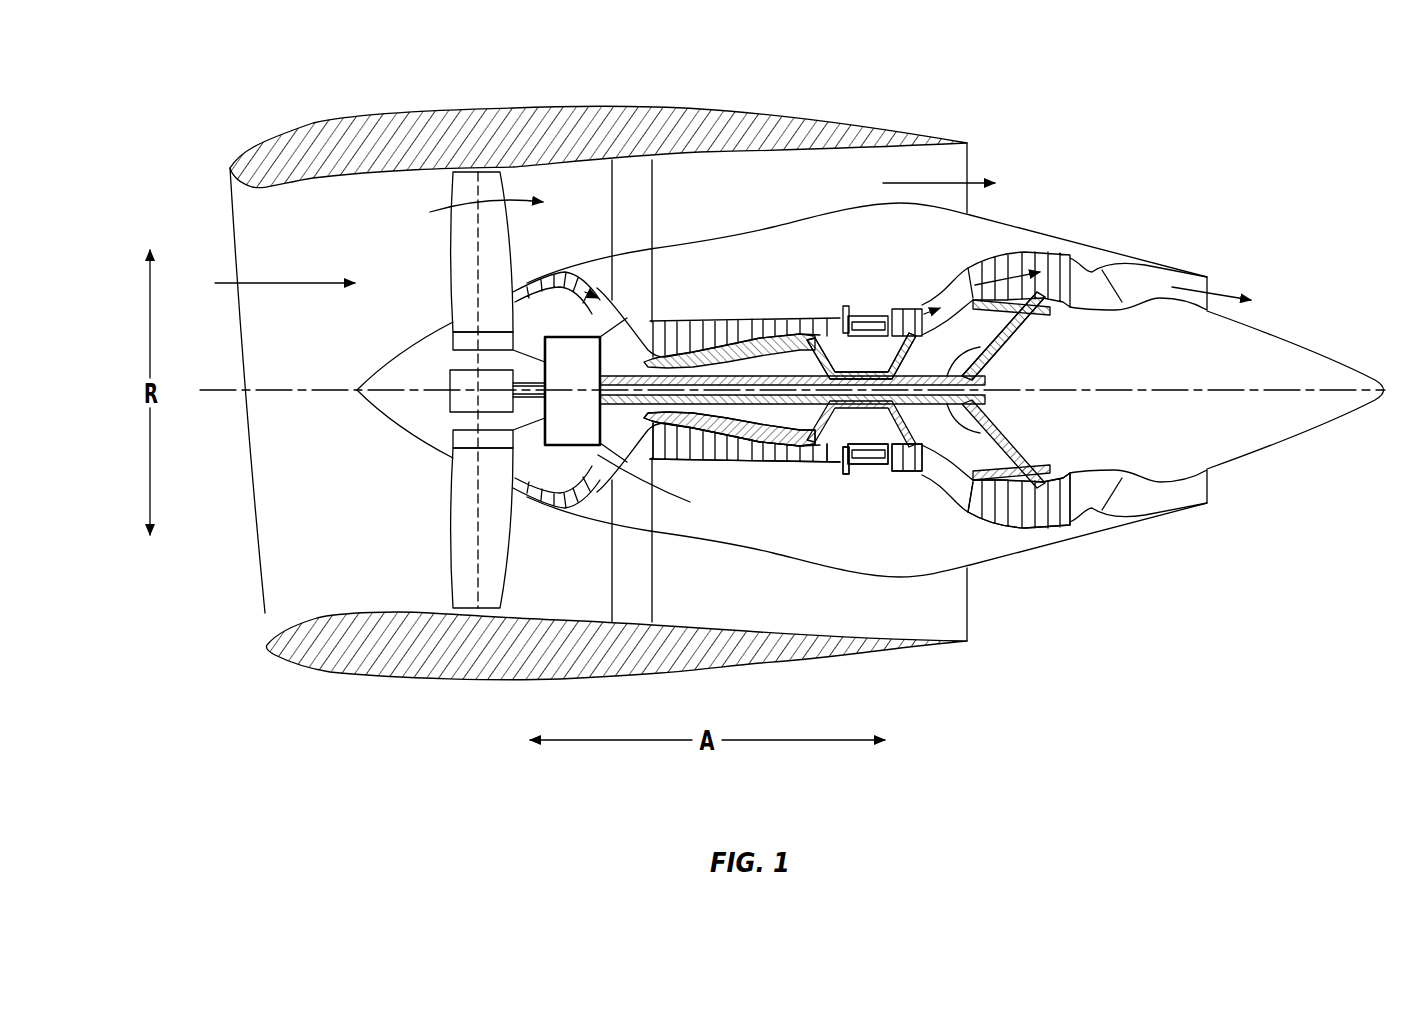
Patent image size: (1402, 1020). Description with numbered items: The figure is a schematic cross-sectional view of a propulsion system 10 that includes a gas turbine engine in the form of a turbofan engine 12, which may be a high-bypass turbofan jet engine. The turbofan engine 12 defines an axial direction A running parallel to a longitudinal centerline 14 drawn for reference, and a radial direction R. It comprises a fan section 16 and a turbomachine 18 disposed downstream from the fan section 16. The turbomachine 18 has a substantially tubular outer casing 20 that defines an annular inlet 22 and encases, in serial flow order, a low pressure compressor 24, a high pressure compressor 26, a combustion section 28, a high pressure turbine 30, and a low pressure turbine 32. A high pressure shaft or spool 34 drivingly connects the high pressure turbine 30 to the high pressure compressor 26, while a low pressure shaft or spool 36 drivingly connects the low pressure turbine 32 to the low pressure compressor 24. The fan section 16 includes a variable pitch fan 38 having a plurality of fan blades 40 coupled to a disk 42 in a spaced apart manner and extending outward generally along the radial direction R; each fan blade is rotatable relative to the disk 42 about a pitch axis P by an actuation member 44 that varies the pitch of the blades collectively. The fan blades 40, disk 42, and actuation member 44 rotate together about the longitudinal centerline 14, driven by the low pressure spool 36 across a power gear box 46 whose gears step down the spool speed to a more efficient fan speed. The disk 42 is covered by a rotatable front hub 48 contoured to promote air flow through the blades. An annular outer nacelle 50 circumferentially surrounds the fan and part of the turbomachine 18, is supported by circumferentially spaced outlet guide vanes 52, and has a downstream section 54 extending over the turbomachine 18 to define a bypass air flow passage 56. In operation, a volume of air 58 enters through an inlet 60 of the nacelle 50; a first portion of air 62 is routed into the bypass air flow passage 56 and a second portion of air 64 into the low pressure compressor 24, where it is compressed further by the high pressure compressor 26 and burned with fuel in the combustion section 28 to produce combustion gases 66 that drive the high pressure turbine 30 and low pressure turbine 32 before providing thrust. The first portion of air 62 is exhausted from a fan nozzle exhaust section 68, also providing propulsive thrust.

The propulsion system 10 is at (1118, 108).
The turbofan engine 12 is at (242, 146).
The longitudinal centerline 14 is at (1142, 390).
The fan section 16 is at (406, 188).
The turbomachine 18 is at (776, 254).
The outer casing 20 is at (810, 560).
The annular inlet 22 is at (555, 503).
The low pressure compressor 24 is at (657, 463).
The high pressure compressor 26 is at (683, 456).
The combustion section 28 is at (861, 462).
The high pressure turbine 30 is at (932, 463).
The low pressure turbine 32 is at (1058, 534).
The high pressure shaft or spool 34 is at (893, 340).
The low pressure shaft or spool 36 is at (985, 352).
The variable pitch fan 38 is at (412, 446).
The fan blades 40 is at (450, 548).
The disk 42 is at (473, 338).
The actuation member 44 is at (450, 378).
The power gear box 46 is at (598, 325).
The rotatable front hub 48 is at (363, 405).
The outer nacelle 50 is at (500, 680).
The outlet guide vanes 52 is at (652, 163).
The downstream section 54 is at (910, 138).
The bypass air flow passage 56 is at (820, 198).
The volume of air 58 is at (287, 283).
The inlet 60 is at (262, 613).
The first portion of air 62 is at (467, 207).
The second portion of air 64 is at (530, 280).
The combustion gases 66 is at (1010, 253).
The fan nozzle exhaust section 68 is at (978, 157).
The pitch axis P is at (483, 187).